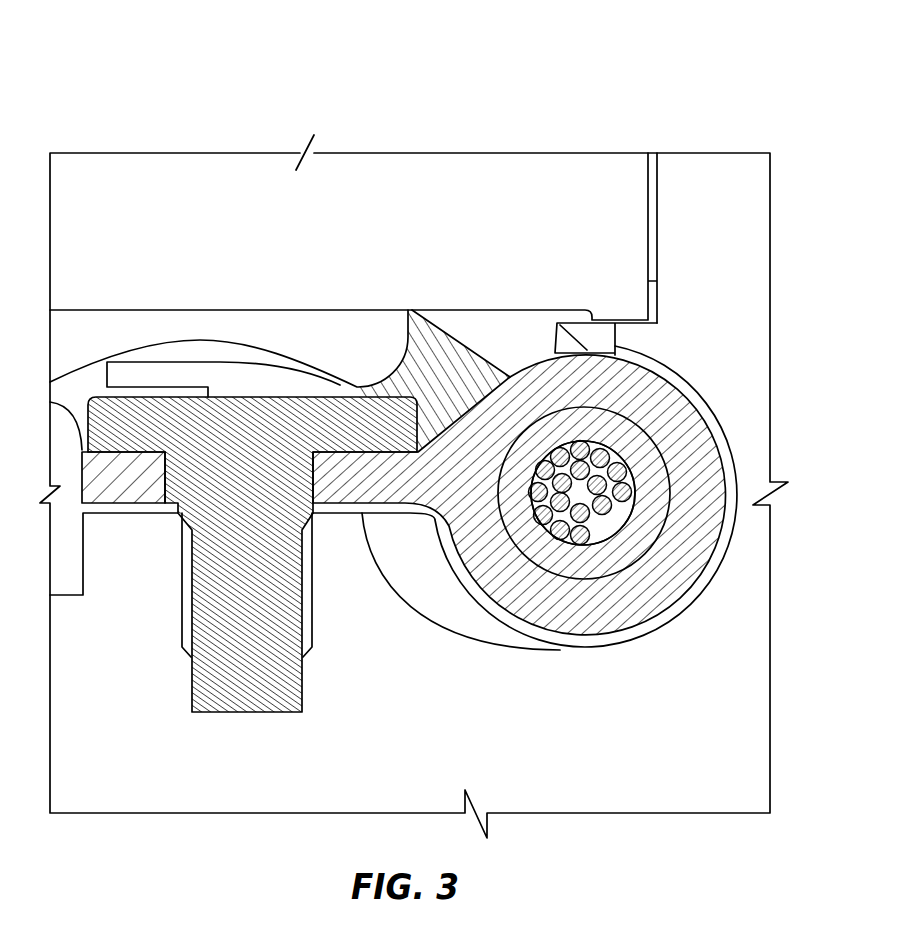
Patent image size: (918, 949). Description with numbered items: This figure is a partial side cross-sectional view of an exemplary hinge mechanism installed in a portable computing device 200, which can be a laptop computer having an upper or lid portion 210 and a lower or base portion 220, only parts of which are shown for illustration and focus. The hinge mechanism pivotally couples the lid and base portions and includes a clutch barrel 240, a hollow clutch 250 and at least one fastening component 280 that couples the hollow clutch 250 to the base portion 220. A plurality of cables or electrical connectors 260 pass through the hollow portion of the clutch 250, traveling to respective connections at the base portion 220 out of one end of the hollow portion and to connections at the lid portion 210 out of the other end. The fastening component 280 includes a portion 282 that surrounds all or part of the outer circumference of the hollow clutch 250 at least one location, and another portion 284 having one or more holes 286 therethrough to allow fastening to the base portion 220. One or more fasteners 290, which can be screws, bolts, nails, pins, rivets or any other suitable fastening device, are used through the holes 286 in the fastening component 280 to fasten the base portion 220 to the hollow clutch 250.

The portable computing device 200 is at (706, 104).
The lid portion 210 is at (119, 273).
The base portion 220 is at (104, 692).
The clutch barrel 240 is at (472, 627).
The hollow clutch 250 is at (643, 525).
The cables or electrical connectors 260 is at (455, 391).
The fastening component 280 is at (650, 598).
The portion surrounding hollow clutch 282 is at (483, 588).
The portion having holes 284 is at (104, 490).
The holes 286 is at (175, 528).
The fasteners 290 is at (224, 490).